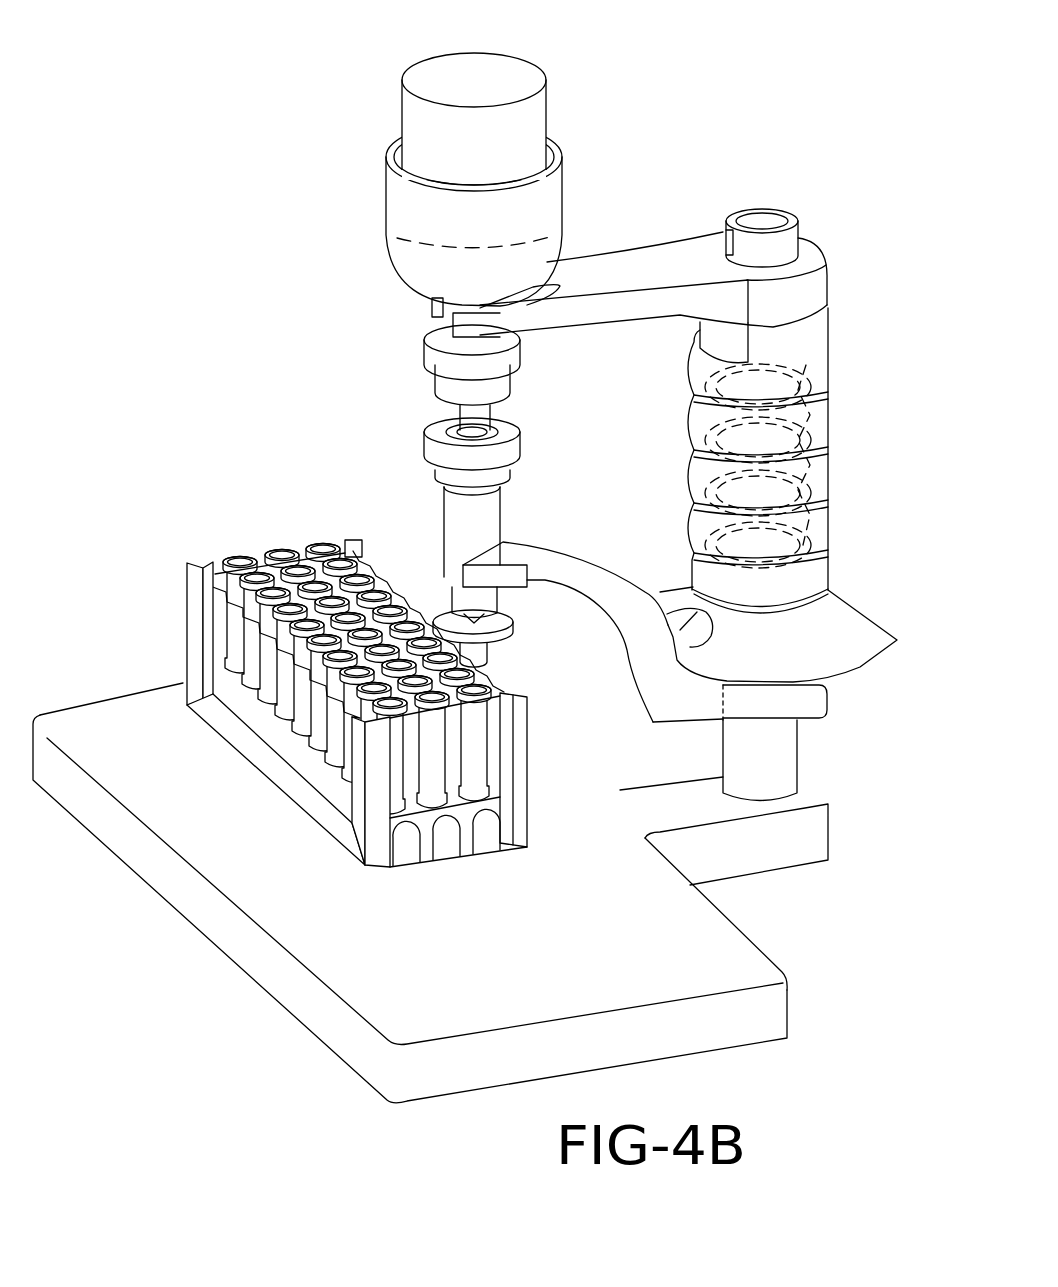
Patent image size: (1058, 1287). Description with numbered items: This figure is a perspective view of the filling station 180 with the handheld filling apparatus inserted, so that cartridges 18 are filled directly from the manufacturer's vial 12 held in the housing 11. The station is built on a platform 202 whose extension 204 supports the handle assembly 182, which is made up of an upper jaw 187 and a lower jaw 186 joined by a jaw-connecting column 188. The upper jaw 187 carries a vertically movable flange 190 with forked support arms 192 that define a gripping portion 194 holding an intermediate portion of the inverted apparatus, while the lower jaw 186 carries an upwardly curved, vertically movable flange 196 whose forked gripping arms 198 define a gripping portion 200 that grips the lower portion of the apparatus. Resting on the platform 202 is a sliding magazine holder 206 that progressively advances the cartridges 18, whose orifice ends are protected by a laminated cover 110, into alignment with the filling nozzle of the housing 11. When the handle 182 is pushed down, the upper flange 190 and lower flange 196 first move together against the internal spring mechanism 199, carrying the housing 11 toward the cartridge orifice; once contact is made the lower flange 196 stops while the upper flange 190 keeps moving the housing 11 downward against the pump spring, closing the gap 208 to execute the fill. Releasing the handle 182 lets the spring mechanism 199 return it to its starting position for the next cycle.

The housing 11 is at (395, 200).
The vial 12 is at (408, 112).
The cartridges 18 is at (290, 690).
The laminated cover 110 is at (283, 553).
The filling station 180 is at (617, 140).
The handle assembly 182 is at (743, 544).
The lower jaw 186 is at (593, 603).
The upper jaw 187 is at (548, 320).
The jaw-connecting column 188 is at (765, 209).
The upper flange 190 is at (653, 295).
The forked support arms 192 is at (500, 338).
The gripping portion 194 is at (473, 312).
The lower flange 196 is at (602, 607).
The forked gripping arms 198 is at (490, 573).
The internal spring mechanism 199 is at (700, 456).
The gripping portion 200 is at (480, 560).
The platform 202 is at (208, 910).
The extension 204 is at (745, 853).
The sliding magazine holder 206 is at (190, 602).
The gap 208 is at (712, 680).